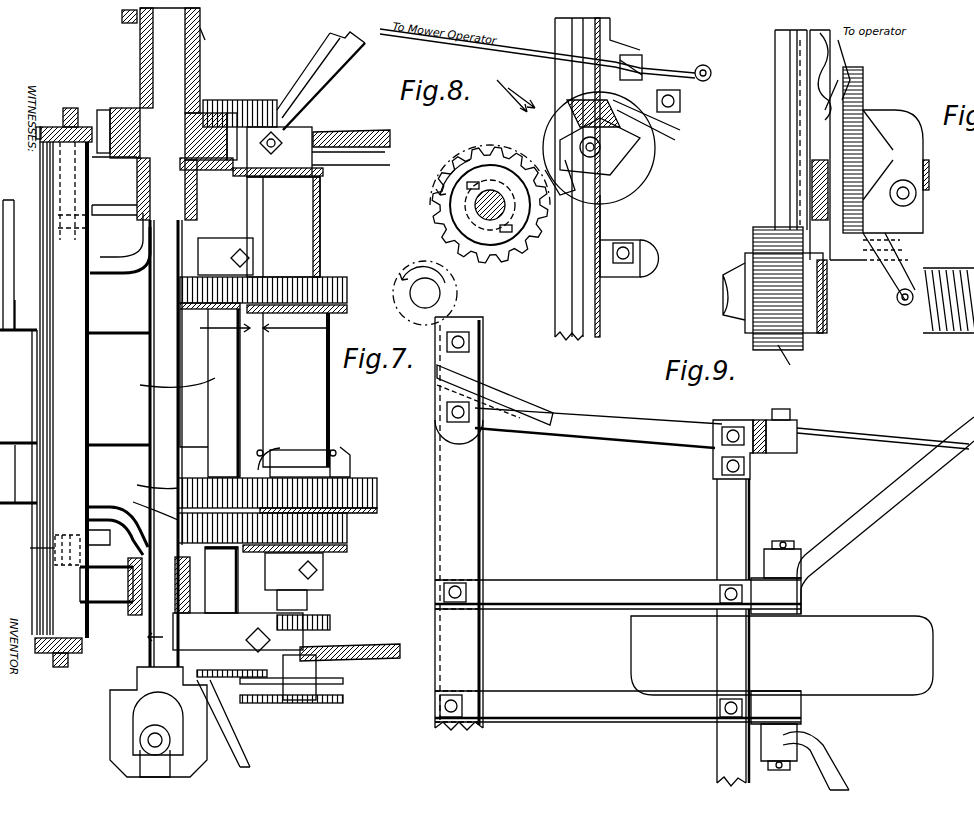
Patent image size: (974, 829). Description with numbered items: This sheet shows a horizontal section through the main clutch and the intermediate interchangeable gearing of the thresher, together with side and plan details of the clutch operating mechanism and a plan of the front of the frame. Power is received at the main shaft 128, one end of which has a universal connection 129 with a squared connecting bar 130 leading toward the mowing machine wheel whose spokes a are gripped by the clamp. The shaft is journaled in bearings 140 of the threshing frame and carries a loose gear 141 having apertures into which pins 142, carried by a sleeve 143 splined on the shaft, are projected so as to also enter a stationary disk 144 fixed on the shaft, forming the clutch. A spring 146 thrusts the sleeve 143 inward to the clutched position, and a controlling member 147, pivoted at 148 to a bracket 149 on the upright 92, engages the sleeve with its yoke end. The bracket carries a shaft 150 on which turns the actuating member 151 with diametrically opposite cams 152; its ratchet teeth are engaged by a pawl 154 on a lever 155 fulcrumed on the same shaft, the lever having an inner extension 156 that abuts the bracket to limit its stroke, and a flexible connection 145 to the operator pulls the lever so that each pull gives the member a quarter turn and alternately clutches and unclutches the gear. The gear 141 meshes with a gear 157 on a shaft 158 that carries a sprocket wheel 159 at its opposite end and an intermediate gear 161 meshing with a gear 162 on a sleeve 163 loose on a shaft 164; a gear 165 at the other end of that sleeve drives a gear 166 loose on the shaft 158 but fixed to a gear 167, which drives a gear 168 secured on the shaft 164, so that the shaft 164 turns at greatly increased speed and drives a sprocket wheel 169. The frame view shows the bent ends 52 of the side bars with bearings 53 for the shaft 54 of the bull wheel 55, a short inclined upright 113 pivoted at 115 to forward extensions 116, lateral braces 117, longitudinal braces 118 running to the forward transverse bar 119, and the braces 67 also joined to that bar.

In FIG. 7, the forward inwardly and downwardly bent ends 52 is at (325, 45).
In FIG. 9, the forward inwardly and downwardly bent ends 52 is at (870, 515).
In FIG. 7, the bearings 53 is at (30, 548).
In FIG. 9, the bearings 53 is at (795, 552).
In FIG. 9, the shaft 54 is at (781, 533).
In FIG. 9, the bull wheel 55 is at (890, 684).
In FIG. 9, the braces 67 is at (555, 578).
In FIG. 7, the uprights 92 is at (70, 110).
In FIG. 8, the uprights 92 is at (585, 293).
In FIG. 13, the uprights 92 is at (785, 92).
In FIG. 9, the uprights 92 is at (795, 598).
In FIG. 7, the spokes a is at (18, 377).
In FIG. 9, the outer short inclined upright 113 is at (752, 414).
In FIG. 9, the pivotal connection 115 is at (790, 420).
In FIG. 9, the forward extensions 116 is at (895, 427).
In FIG. 9, the lateral braces 117 is at (725, 529).
In FIG. 9, the longitudinal braces 118 is at (620, 414).
In FIG. 9, the forward transverse bar 119 is at (460, 476).
In FIG. 7, the main shaft 128 is at (160, 352).
In FIG. 8, the main shaft 128 is at (473, 200).
In FIG. 7, the universal connection 129 is at (140, 716).
In FIG. 7, the squared connecting bar 130 is at (135, 760).
In FIG. 7, the bearings 140 is at (150, 195).
In FIG. 7, the loose gear 141 is at (103, 112).
In FIG. 8, the loose gear 141 is at (432, 205).
In FIG. 13, the loose gear 141 is at (800, 356).
In FIG. 7, the pins 142 is at (128, 87).
In FIG. 7, the sleeve 143 is at (217, 30).
In FIG. 8, the sleeve 143 is at (485, 195).
In FIG. 13, the sleeve 143 is at (880, 310).
In FIG. 7, the stationary disk 144 is at (195, 178).
In FIG. 13, the stationary disk 144 is at (750, 262).
In FIG. 8, the flexible connection 145 is at (548, 45).
In FIG. 13, the flexible connection 145 is at (827, 117).
In FIG. 13, the spring 146 is at (948, 311).
In FIG. 8, the controlling member 147 is at (618, 217).
In FIG. 13, the controlling member 147 is at (905, 235).
In FIG. 8, the pivotal connection 148 is at (650, 185).
In FIG. 13, the pivotal connection 148 is at (916, 197).
In FIG. 13, the bracket 149 is at (923, 150).
In FIG. 8, the shaft 150 is at (655, 160).
In FIG. 13, the shaft 150 is at (942, 175).
In FIG. 8, the rotatable actuating member 151 is at (521, 90).
In FIG. 13, the rotatable actuating member 151 is at (880, 135).
In FIG. 13, the raised side portions 152 is at (890, 158).
In FIG. 8, the pawl 154 is at (652, 115).
In FIG. 13, the pawl 154 is at (865, 85).
In FIG. 8, the lever 155 is at (560, 107).
In FIG. 13, the lever 155 is at (835, 143).
In FIG. 8, the inner extension 156 is at (555, 125).
In FIG. 13, the inner extension 156 is at (846, 253).
In FIG. 7, the gear 157 is at (250, 100).
In FIG. 8, the gear 157 is at (438, 237).
In FIG. 7, the shaft 158 is at (156, 387).
In FIG. 8, the shaft 158 is at (428, 292).
In FIG. 7, the sprocket wheel 159 is at (220, 690).
In FIG. 7, the intermediate gear 161 is at (225, 256).
In FIG. 7, the gear 162 is at (315, 278).
In FIG. 7, the sleeve 163 is at (330, 370).
In FIG. 7, the shaft 164 is at (300, 210).
In FIG. 7, the gear 165 is at (350, 478).
In FIG. 7, the gear 166 is at (137, 485).
In FIG. 7, the gear 167 is at (135, 506).
In FIG. 7, the gear 168 is at (340, 532).
In FIG. 7, the sprocket wheel 169 is at (338, 700).